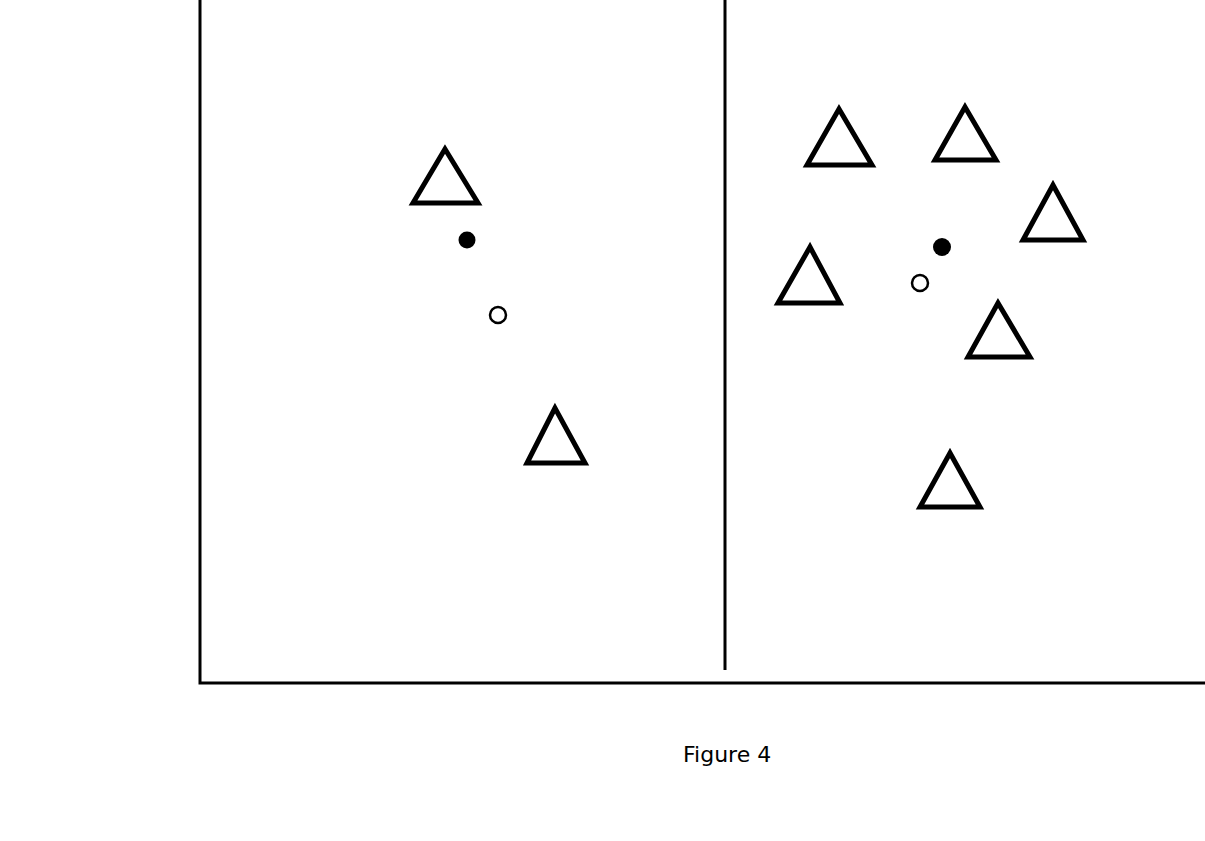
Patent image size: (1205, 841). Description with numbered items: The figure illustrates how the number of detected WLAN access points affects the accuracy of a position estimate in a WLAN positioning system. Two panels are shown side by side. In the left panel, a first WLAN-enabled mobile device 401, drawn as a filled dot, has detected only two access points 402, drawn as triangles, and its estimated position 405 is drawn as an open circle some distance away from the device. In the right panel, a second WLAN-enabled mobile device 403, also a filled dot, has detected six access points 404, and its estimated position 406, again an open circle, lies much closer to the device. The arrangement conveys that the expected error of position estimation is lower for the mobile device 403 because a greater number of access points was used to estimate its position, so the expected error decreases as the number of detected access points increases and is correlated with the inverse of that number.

The WLAN-enabled mobile device 401 is at (438, 242).
The detected access points 402 is at (520, 320).
The WLAN-enabled mobile device 403 is at (914, 245).
The detected access points 404 is at (949, 325).
The estimated position 405 is at (526, 317).
The estimated position 406 is at (950, 285).